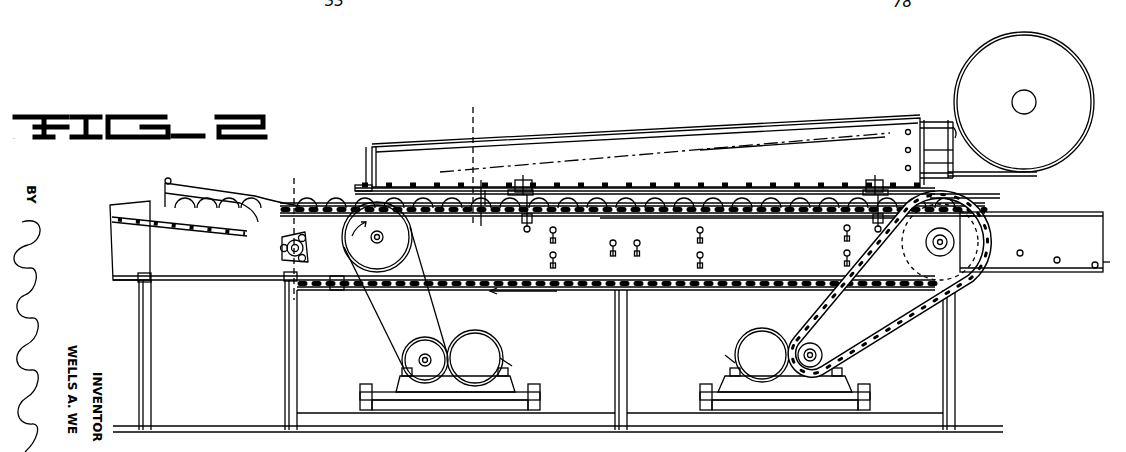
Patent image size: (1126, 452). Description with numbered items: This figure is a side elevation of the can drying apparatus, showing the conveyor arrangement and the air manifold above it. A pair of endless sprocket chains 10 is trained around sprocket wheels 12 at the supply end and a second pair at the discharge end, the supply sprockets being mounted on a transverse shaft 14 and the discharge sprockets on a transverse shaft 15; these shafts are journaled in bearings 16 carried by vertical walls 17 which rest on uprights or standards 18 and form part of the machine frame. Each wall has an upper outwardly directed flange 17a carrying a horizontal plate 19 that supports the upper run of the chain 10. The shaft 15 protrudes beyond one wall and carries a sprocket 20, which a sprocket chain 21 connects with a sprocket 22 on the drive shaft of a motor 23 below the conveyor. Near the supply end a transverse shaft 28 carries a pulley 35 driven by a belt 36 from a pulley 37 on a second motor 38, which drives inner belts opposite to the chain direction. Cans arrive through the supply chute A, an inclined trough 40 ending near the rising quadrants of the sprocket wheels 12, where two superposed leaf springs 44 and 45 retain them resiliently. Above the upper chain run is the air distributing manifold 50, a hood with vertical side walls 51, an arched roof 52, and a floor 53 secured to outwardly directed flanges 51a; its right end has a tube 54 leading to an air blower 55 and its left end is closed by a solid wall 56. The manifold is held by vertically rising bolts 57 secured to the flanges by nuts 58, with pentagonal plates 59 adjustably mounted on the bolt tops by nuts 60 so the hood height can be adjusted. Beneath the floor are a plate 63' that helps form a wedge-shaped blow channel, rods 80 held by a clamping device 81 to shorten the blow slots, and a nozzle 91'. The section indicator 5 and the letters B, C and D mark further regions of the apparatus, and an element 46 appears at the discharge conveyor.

The section line 5- 5 is at (468, 133).
The endless sprocket chains 10 is at (662, 286).
The sprocket wheels 12 is at (292, 230).
The transverse shaft 14 is at (376, 239).
The transverse shaft 15 is at (948, 238).
The bearings 16 is at (282, 251).
The vertical walls 17 is at (768, 255).
The upper outwardly directed flange 17a is at (652, 214).
The uprights or standards 18 is at (290, 405).
The horizontal plate 19 is at (800, 216).
The sprocket 20 is at (962, 262).
The sprocket chain 21 is at (886, 328).
The sprocket 22 is at (833, 366).
The motor 23 is at (780, 322).
The transverse shaft 28 is at (335, 281).
The pulley 35 is at (401, 238).
The belt 36 is at (440, 324).
The pulley 37 is at (416, 360).
The second motor 38 is at (490, 357).
The inclined trough 40 is at (150, 224).
The leaf spring 44 is at (205, 178).
The leaf spring 45 is at (232, 190).
The roller 46 is at (1103, 273).
The air distributing manifold 50 is at (725, 140).
The vertical side walls 51 is at (790, 181).
The outwardly directed flanges 51a is at (652, 188).
The arched roof or ceiling 52 is at (842, 126).
The floor 53 is at (735, 180).
The tube 54 is at (931, 122).
The air blower 55 is at (1004, 42).
The solid wall 56 is at (373, 165).
The bolts 57 is at (530, 183).
The nuts 58 is at (524, 222).
The pentagonal plates 59 is at (535, 192).
The nuts 60 is at (520, 183).
The plate 63' is at (700, 246).
The rods 80 is at (960, 195).
The clamping device 81 is at (936, 237).
The nozzle 91' is at (500, 171).
The supply chute A is at (128, 203).
The conveyor inlet B is at (351, 198).
The trough C is at (619, 150).
The discharge conveyor D is at (1078, 215).